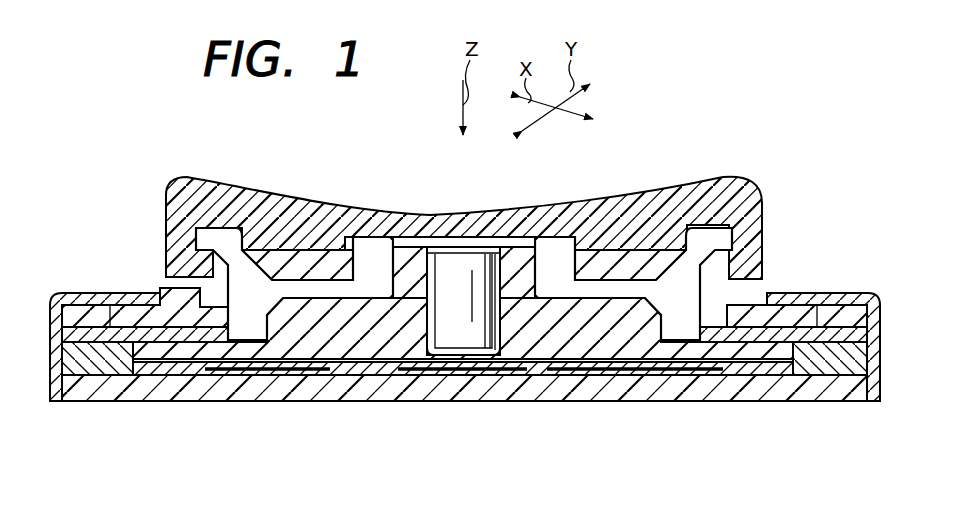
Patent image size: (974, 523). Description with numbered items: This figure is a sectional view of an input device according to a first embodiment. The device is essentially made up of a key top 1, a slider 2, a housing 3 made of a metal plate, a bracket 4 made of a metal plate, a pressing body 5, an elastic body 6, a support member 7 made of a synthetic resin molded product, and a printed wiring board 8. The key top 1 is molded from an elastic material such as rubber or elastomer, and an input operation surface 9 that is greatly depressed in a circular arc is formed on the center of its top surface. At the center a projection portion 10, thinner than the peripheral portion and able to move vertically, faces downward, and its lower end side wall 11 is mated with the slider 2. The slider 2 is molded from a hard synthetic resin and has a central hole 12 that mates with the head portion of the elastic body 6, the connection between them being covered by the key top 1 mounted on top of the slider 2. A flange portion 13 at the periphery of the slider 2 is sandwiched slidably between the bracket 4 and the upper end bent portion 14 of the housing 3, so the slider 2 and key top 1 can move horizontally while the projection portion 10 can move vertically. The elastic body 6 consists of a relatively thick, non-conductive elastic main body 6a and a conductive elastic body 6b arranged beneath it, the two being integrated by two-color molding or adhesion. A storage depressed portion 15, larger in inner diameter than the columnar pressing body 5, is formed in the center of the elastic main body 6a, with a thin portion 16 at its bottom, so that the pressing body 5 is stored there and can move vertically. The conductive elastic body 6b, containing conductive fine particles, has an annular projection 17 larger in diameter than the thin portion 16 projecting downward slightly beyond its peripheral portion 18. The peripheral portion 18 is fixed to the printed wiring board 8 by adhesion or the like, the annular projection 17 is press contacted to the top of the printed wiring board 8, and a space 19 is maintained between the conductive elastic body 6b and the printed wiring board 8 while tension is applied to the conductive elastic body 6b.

The key top 1 is at (499, 201).
The slider 2 is at (624, 263).
The housing 3 is at (876, 327).
The bracket 4 is at (834, 337).
The pressing body 5 is at (457, 265).
The elastic body 6 is at (635, 433).
The elastic main body 6a is at (571, 372).
The conductive elastic body 6b is at (643, 372).
The support member 7 is at (863, 354).
The printed wiring board 8 is at (836, 396).
The input operation surface 9 is at (301, 196).
The projection portion 10 is at (445, 237).
The lower end side wall 11 is at (752, 242).
The hole 12 is at (541, 238).
The flange portion 13 is at (141, 312).
The upper end bent portion 14 is at (90, 293).
The storage depressed portion 15 is at (501, 330).
The thin portion 16 is at (470, 352).
The annular projection 17 is at (392, 366).
The peripheral portion 18 is at (766, 376).
The space 19 is at (290, 372).